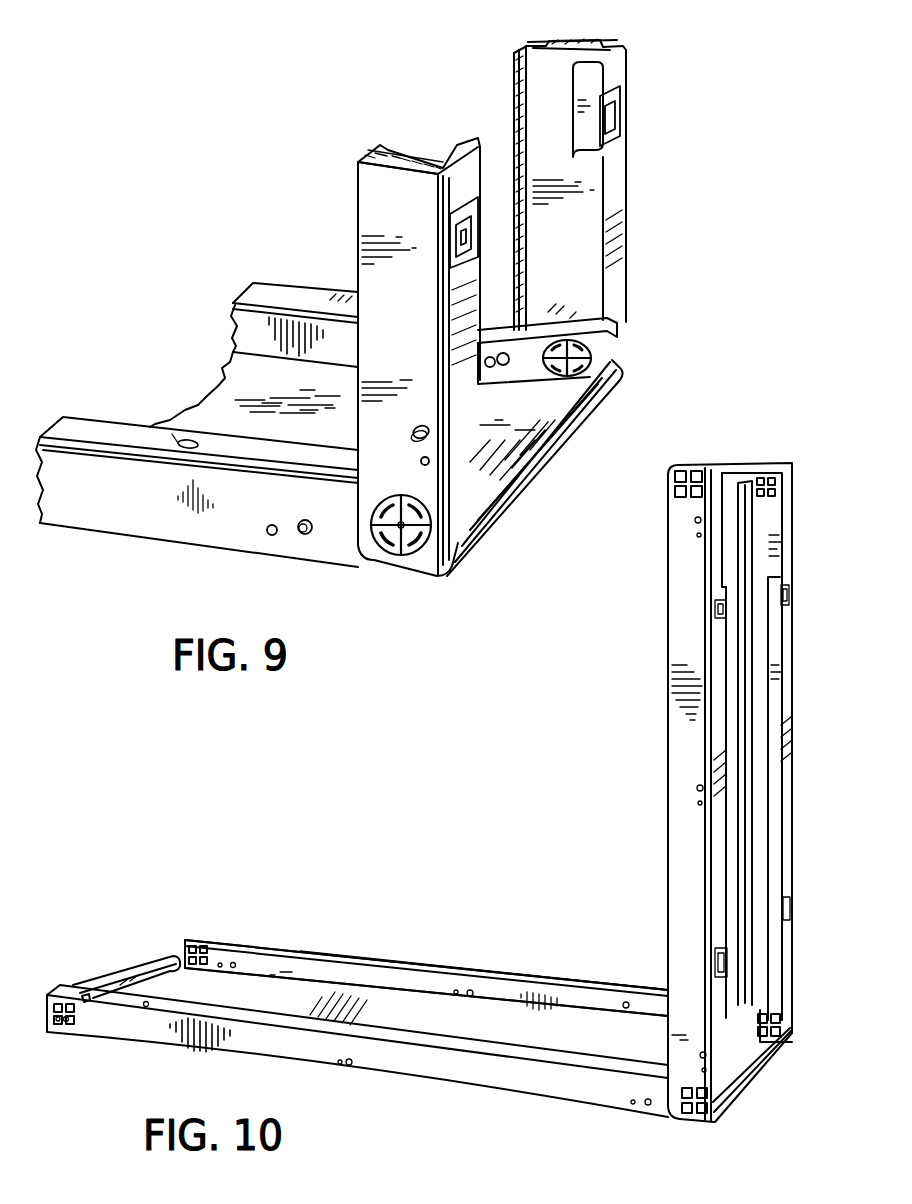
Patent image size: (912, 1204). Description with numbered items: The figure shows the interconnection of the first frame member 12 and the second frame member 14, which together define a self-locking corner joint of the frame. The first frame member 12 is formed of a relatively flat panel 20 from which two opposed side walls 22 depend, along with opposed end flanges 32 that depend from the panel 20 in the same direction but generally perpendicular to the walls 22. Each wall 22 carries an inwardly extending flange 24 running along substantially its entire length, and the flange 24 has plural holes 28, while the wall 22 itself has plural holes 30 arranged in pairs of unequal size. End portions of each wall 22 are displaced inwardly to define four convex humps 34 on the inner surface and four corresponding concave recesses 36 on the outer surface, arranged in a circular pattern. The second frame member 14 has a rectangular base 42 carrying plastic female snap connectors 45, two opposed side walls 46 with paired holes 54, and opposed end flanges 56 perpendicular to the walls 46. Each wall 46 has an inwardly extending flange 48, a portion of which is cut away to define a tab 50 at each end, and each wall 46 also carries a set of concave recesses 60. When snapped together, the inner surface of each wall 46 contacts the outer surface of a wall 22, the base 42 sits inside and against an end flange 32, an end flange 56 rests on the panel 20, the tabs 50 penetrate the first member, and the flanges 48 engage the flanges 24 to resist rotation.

In FIG. 9, the first frame member 12 is at (116, 544).
In FIG. 10, the first frame member 12 is at (383, 1088).
In FIG. 9, the second frame member 14 is at (355, 142).
In FIG. 10, the second frame member 14 is at (808, 500).
In FIG. 9, the panel 20 is at (226, 386).
In FIG. 10, the panel 20 is at (577, 1033).
In FIG. 9, the side wall 22 is at (258, 328).
In FIG. 10, the side wall 22 is at (318, 975).
In FIG. 9, the flange 24 is at (278, 292).
In FIG. 10, the flange 24 is at (450, 945).
In FIG. 9, the hole 28 is at (186, 437).
In FIG. 9, the hole 30 is at (305, 538).
In FIG. 9, the end flange 32 is at (494, 512).
In FIG. 10, the end flange 32 is at (128, 976).
In FIG. 9, the hump 34 is at (597, 341).
In FIG. 10, the hump 34 is at (228, 910).
In FIG. 10, the recess 36 is at (52, 1031).
In FIG. 9, the rectangular base 42 is at (618, 178).
In FIG. 10, the rectangular base 42 is at (788, 658).
In FIG. 9, the female snap connector 45 is at (466, 231).
In FIG. 9, the side wall 46 is at (372, 383).
In FIG. 10, the side wall 46 is at (683, 760).
In FIG. 9, the flange 48 is at (520, 87).
In FIG. 10, the flange 48 is at (745, 863).
In FIG. 9, the tab 50 is at (541, 389).
In FIG. 9, the hole 54 is at (420, 461).
In FIG. 9, the end flange 56 is at (550, 416).
In FIG. 10, the end flange 56 is at (740, 1064).
In FIG. 9, the recess 60 is at (418, 550).
In FIG. 10, the recess 60 is at (684, 473).